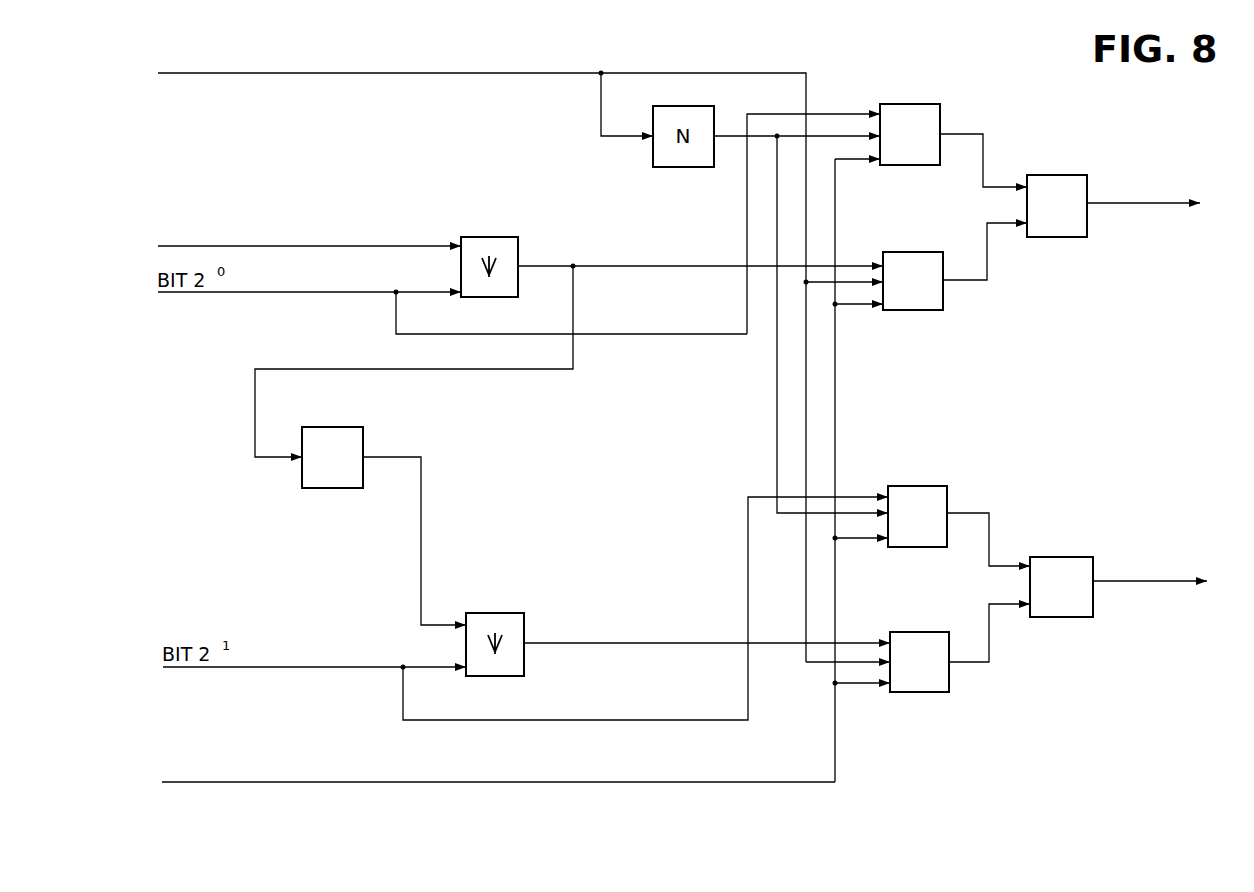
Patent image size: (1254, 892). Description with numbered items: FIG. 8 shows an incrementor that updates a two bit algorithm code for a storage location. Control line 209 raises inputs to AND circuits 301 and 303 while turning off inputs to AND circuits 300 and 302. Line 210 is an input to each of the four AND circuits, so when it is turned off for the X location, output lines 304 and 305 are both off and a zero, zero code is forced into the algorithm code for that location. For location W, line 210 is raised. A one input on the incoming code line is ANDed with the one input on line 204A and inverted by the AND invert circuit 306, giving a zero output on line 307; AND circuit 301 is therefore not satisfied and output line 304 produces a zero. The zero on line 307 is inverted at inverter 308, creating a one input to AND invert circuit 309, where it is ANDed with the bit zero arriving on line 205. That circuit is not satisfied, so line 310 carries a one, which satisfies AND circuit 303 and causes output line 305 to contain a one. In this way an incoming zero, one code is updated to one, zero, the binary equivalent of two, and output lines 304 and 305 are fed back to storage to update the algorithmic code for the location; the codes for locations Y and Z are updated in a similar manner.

The line 209 is at (272, 73).
The line 204A is at (323, 245).
The AND invert circuit 306 is at (498, 235).
The line 307 is at (547, 263).
The AND circuit 300 is at (912, 102).
The AND circuit 301 is at (938, 300).
The output line 304 is at (1127, 197).
The inverter 308 is at (345, 423).
The AND invert circuit 309 is at (492, 613).
The line 205 is at (290, 668).
The line 310 is at (600, 643).
The AND circuit 302 is at (928, 483).
The AND circuit 303 is at (943, 683).
The output line 305 is at (1132, 580).
The line 210 is at (517, 778).